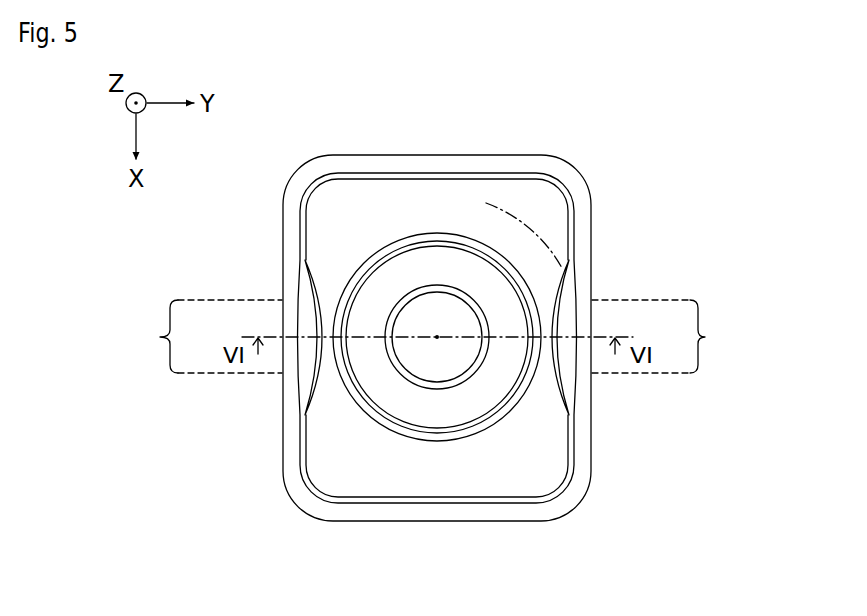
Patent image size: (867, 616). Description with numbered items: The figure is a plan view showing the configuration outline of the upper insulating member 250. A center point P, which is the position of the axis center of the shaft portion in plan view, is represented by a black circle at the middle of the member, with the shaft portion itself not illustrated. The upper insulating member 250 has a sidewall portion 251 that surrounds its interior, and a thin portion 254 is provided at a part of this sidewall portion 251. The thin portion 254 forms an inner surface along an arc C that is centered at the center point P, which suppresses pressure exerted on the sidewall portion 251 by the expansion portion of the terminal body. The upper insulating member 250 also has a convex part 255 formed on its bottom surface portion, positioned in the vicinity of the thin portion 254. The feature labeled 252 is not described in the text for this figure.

The upper insulating member 250 is at (582, 148).
The sidewall portion 251 is at (583, 229).
The lens 252 is at (418, 320).
The thin portion 254 is at (429, 336).
The convex part 255 is at (305, 365).
The center point P is at (437, 335).
The arc C is at (519, 220).